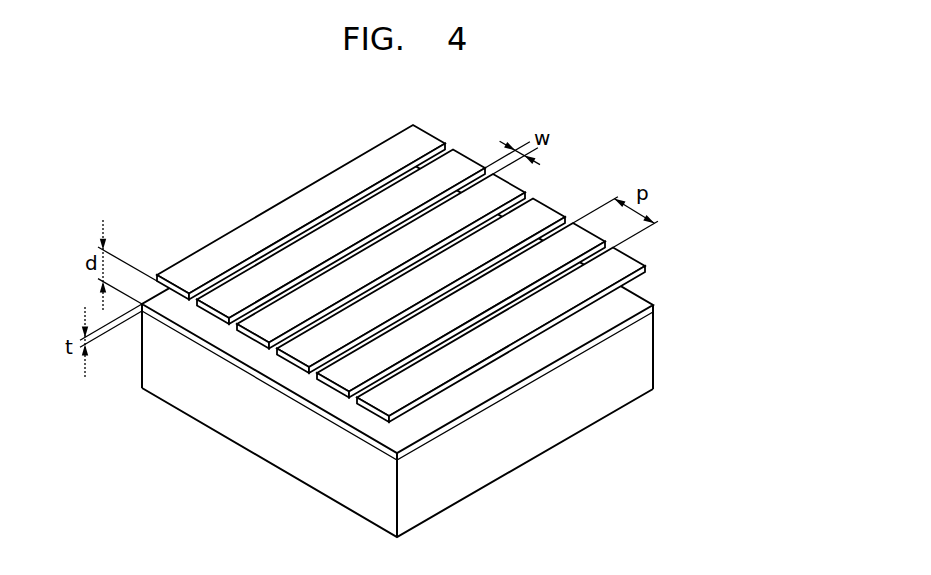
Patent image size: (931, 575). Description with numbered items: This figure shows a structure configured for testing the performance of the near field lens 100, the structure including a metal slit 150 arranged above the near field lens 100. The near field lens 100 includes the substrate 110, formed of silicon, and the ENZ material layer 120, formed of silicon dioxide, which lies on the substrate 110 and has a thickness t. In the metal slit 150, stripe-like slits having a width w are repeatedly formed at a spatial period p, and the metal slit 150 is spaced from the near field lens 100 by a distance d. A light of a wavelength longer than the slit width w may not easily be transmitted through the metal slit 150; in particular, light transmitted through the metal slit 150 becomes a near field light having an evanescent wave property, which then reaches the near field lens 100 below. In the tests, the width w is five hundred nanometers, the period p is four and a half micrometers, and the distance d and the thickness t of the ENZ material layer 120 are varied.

The near field lens 100 is at (462, 346).
The substrate 110 is at (650, 358).
The ENZ material layer 120 is at (652, 312).
The metal slit 150 is at (265, 220).